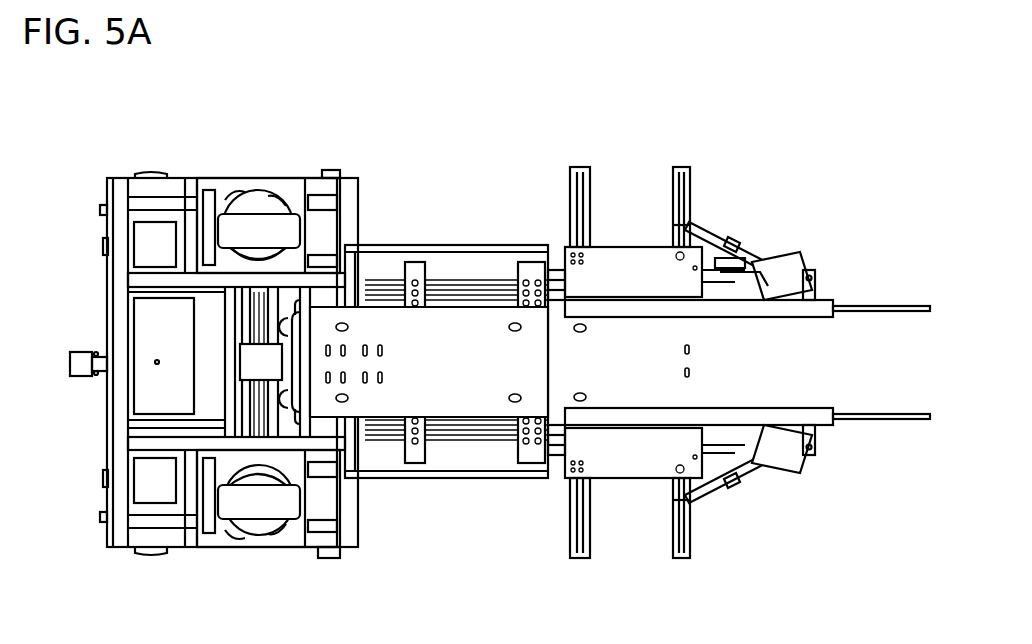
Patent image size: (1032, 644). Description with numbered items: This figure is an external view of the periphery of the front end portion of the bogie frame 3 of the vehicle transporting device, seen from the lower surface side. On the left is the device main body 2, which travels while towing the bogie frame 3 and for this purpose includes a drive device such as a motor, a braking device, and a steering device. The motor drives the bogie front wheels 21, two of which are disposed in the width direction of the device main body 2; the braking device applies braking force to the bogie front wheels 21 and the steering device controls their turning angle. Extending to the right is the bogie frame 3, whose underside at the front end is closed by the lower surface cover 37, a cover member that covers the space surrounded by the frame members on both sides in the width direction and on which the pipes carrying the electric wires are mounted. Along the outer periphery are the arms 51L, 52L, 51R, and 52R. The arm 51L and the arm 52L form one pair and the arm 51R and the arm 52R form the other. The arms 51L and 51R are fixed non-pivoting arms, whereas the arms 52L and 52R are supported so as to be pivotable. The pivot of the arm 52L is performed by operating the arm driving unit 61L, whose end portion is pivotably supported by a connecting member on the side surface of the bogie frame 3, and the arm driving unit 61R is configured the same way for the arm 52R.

The device main body 2 is at (213, 367).
The bogie frame 3 is at (611, 375).
The bogie front wheels 21 is at (256, 233).
The lower surface cover 37 is at (438, 393).
The arm 51L is at (568, 206).
The arm 52L is at (672, 206).
The arm 51R is at (568, 538).
The arm 52R is at (672, 538).
The arm driving unit 61L is at (760, 262).
The arm driving unit 61R is at (742, 484).